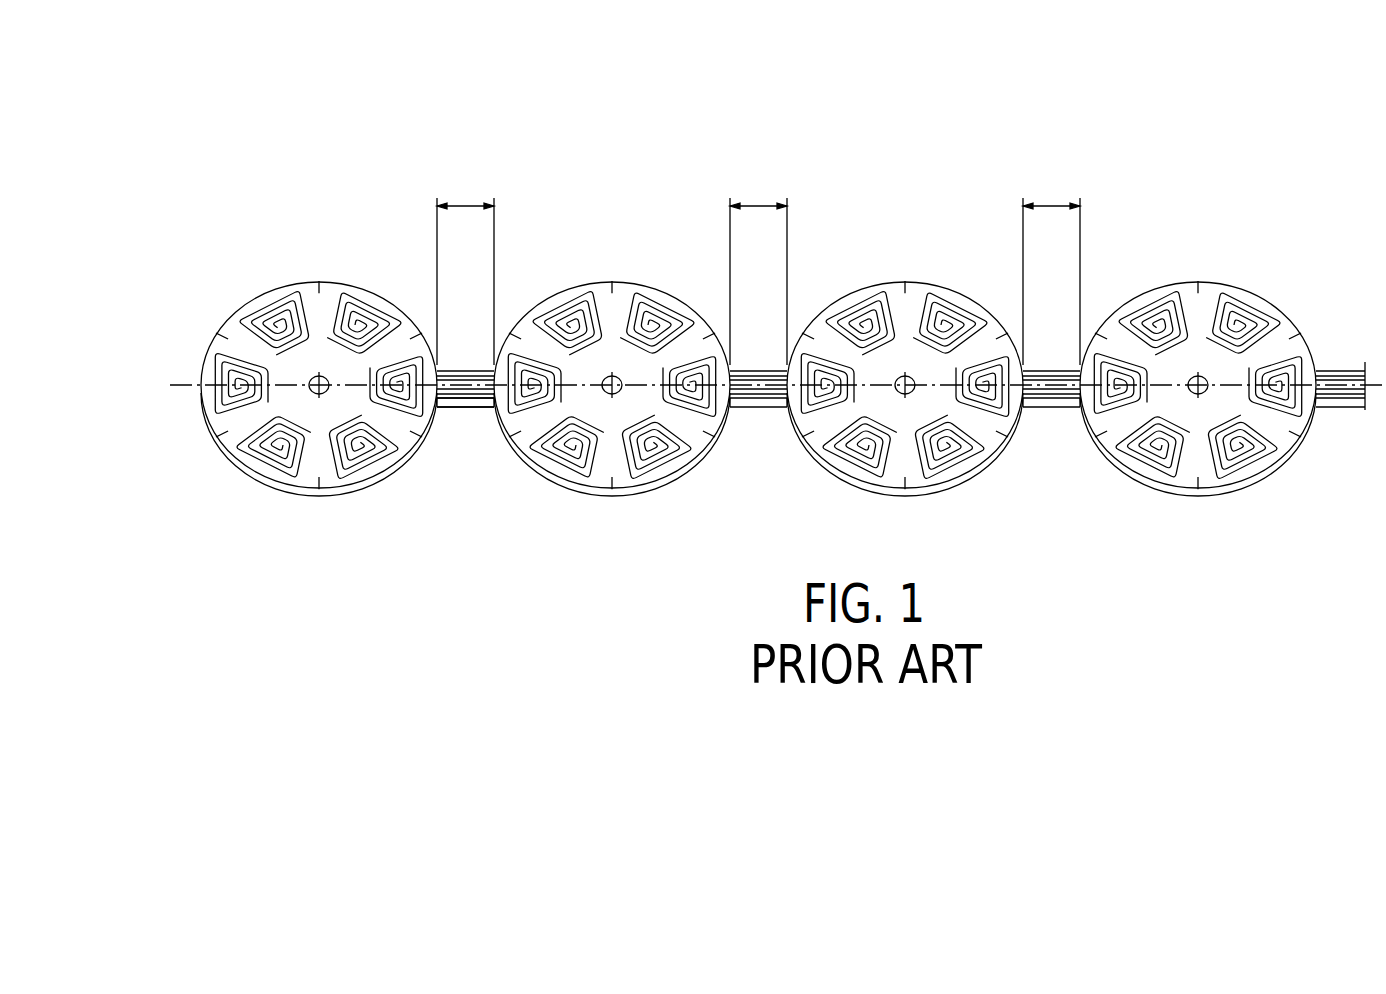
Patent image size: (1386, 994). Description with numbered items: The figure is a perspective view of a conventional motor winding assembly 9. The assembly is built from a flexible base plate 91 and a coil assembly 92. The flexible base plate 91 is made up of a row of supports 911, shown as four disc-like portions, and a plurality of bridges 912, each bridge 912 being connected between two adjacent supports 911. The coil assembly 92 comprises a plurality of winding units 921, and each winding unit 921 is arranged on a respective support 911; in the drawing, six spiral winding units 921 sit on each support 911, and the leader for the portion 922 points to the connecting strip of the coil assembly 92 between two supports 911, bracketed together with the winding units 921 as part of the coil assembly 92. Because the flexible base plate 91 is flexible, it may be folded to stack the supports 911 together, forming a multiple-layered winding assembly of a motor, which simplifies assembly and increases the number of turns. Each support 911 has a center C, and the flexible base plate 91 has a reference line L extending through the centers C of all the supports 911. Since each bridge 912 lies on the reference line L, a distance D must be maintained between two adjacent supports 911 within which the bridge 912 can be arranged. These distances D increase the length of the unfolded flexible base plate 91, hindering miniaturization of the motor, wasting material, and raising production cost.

The motor winding assembly 9 is at (888, 100).
The flexible base plate 91 is at (276, 250).
The support 911 is at (250, 300).
The bridge 912 is at (465, 366).
The coil assembly 92 is at (463, 500).
The winding unit 921 is at (383, 462).
The connecting wire segment 922 is at (462, 408).
The center C is at (320, 376).
The distance D is at (758, 267).
The reference line L is at (190, 383).